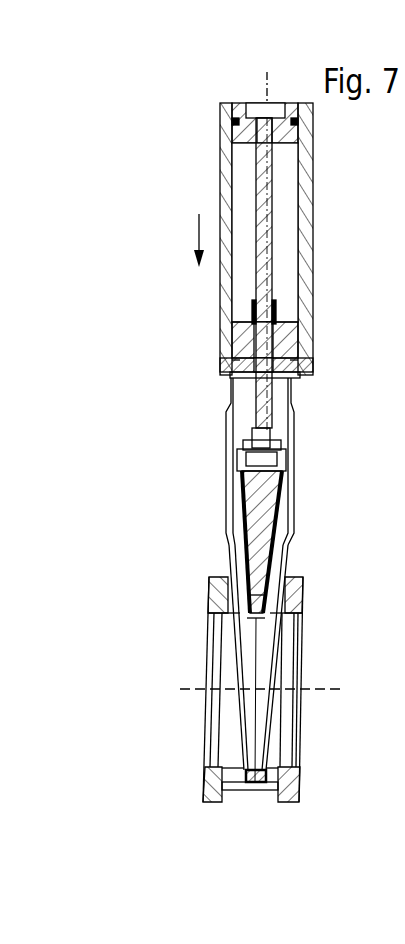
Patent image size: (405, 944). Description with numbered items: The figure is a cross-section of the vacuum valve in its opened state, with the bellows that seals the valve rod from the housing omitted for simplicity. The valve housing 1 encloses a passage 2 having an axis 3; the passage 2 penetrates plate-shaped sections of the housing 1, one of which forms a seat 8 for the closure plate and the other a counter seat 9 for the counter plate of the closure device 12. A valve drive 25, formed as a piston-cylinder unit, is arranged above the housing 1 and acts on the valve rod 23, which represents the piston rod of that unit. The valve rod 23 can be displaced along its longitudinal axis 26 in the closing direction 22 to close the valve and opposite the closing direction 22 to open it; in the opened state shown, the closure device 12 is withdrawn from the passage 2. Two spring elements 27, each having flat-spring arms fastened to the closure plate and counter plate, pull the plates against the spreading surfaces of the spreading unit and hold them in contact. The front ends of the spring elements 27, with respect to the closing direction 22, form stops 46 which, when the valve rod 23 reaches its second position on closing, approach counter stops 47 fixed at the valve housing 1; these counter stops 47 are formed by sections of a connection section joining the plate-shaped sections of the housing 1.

The valve housing 1 is at (240, 800).
The passage 2 is at (225, 709).
The axis 3 is at (318, 688).
The seat 8 is at (238, 612).
The counter seat 9 is at (289, 604).
The closure device 12 is at (276, 553).
The closing direction 22 is at (197, 240).
The valve rod 23 is at (268, 404).
The valve drive 25 is at (316, 254).
The longitudinal axis 26 is at (268, 177).
The spring element 27 is at (243, 620).
The stop 46 is at (260, 616).
The counter stop 47 is at (262, 790).